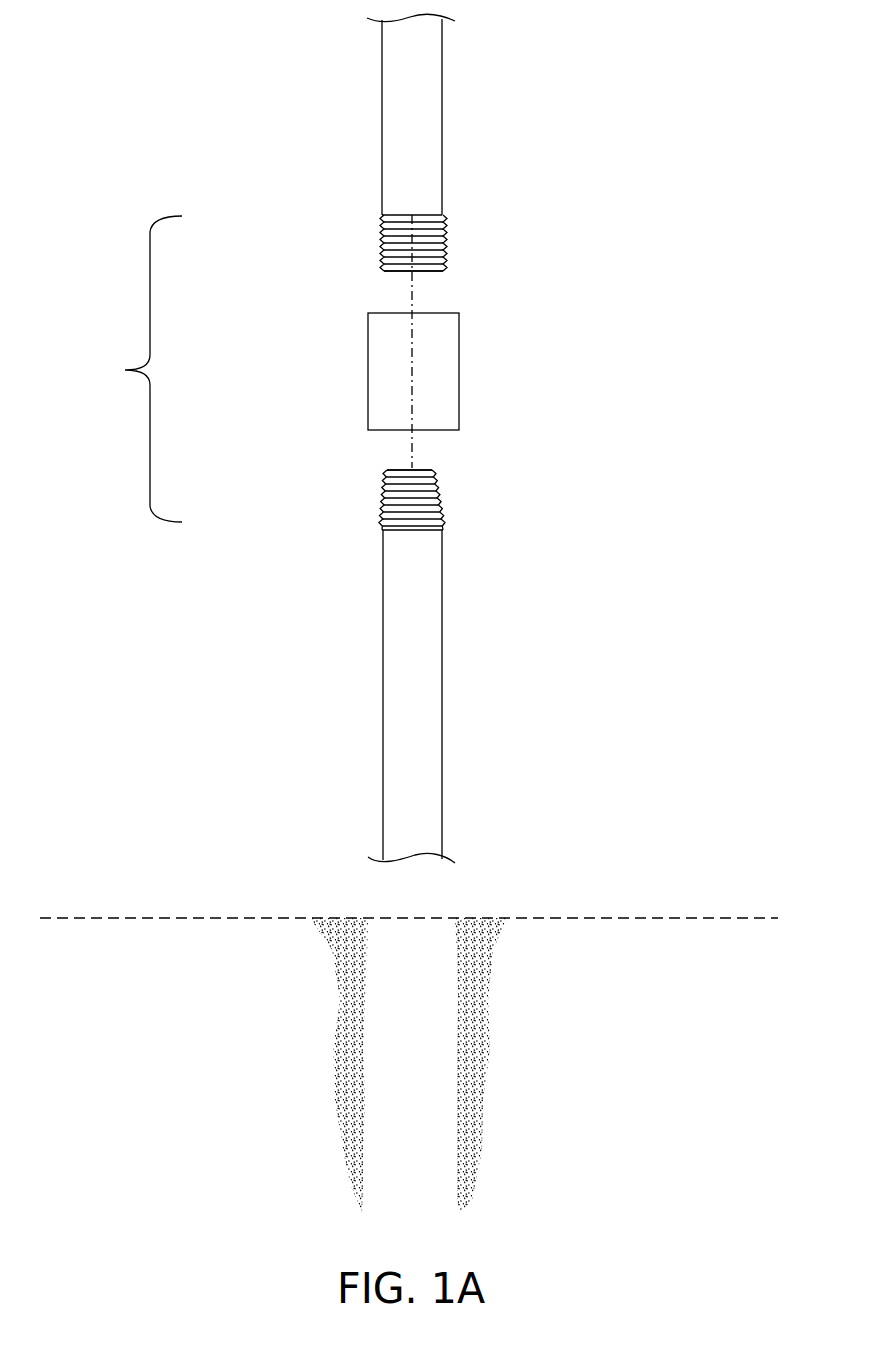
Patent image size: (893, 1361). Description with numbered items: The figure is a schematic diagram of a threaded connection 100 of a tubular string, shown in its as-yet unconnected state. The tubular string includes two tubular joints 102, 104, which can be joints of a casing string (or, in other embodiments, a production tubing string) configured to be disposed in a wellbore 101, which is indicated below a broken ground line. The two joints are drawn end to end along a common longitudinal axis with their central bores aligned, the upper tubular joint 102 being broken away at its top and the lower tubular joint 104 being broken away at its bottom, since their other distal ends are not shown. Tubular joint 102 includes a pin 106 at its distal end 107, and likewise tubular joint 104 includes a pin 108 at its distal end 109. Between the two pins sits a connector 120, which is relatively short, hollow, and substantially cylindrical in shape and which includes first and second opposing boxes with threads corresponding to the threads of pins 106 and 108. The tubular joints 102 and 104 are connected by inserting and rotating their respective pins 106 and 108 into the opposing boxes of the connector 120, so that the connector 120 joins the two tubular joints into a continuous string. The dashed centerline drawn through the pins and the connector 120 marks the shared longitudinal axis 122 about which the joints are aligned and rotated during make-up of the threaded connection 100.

The threaded connection 100 is at (122, 369).
The wellbore 101 is at (297, 1045).
The tubular joint 102 is at (442, 130).
The tubular joint 104 is at (442, 667).
The pin 106 is at (372, 229).
The distal end 107 is at (377, 270).
The pin 108 is at (452, 503).
The distal end 109 is at (380, 470).
The connector 120 is at (459, 368).
The central axis 122 is at (413, 292).